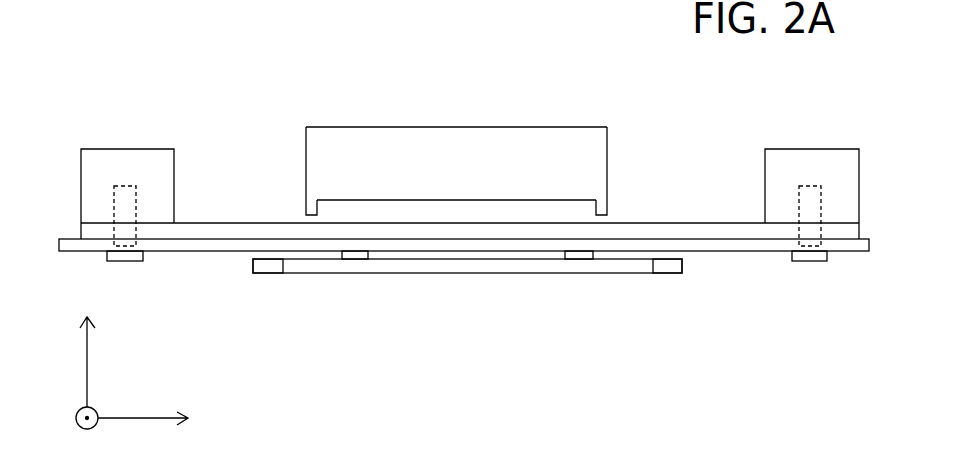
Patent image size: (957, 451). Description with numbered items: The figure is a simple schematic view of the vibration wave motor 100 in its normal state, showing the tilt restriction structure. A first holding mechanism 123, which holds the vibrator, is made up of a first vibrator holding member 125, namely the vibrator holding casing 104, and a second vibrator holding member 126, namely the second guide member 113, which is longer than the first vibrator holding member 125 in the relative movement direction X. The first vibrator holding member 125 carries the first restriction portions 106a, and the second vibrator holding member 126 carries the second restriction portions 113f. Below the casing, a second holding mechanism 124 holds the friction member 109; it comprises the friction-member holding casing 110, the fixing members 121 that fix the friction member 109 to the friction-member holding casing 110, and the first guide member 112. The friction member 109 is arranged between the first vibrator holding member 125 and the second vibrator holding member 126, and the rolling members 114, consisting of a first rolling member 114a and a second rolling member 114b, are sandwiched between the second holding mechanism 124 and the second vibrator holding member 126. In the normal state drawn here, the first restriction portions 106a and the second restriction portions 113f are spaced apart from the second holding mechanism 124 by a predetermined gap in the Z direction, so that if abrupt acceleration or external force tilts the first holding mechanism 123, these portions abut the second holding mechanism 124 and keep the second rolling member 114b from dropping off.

The vibration wave motor 100 is at (108, 31).
The first holding mechanism 123 is at (232, 43).
The first vibrator holding member 125 is at (327, 127).
The vibrator holding casing 104 is at (456, 163).
The first restriction portion 106a is at (317, 207).
The second vibrator holding member 126 is at (293, 266).
The second guide member 113 is at (467, 266).
The second restriction portion 113f is at (268, 270).
The rolling members 114 is at (398, 348).
The first rolling member 114a is at (363, 263).
The second rolling member 114b is at (587, 260).
The second holding mechanism 124 is at (703, 343).
The friction member 109 is at (682, 228).
The first guide member 112 is at (730, 242).
The fixing members 121 is at (810, 258).
The friction-member holding casing 110 is at (833, 215).